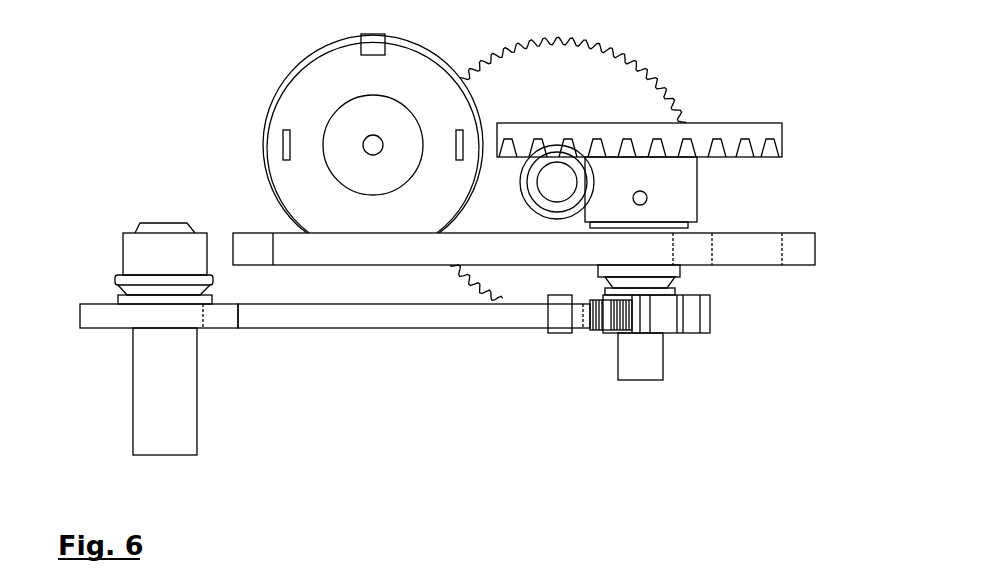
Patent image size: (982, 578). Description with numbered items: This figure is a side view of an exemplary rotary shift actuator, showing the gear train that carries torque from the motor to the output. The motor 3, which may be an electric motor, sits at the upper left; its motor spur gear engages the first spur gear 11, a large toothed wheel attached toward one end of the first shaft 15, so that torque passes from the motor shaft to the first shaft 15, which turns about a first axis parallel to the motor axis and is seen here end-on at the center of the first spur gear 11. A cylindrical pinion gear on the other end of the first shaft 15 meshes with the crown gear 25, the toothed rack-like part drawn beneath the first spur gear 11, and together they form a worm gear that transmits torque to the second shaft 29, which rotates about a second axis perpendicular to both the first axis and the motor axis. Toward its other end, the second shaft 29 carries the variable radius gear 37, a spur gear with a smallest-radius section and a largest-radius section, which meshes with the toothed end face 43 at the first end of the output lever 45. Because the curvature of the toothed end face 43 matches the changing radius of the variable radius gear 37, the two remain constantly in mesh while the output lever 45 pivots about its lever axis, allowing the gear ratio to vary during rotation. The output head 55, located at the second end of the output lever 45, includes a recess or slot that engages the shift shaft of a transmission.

The motor 3 is at (354, 88).
The first spur gear 11 is at (620, 92).
The first shaft 15 is at (569, 193).
The crown gear 25 is at (727, 130).
The second shaft 29 is at (642, 368).
The variable radius gear 37 is at (692, 317).
The toothed end face 43 is at (602, 307).
The output lever 45 is at (388, 318).
The output head 55 is at (103, 322).